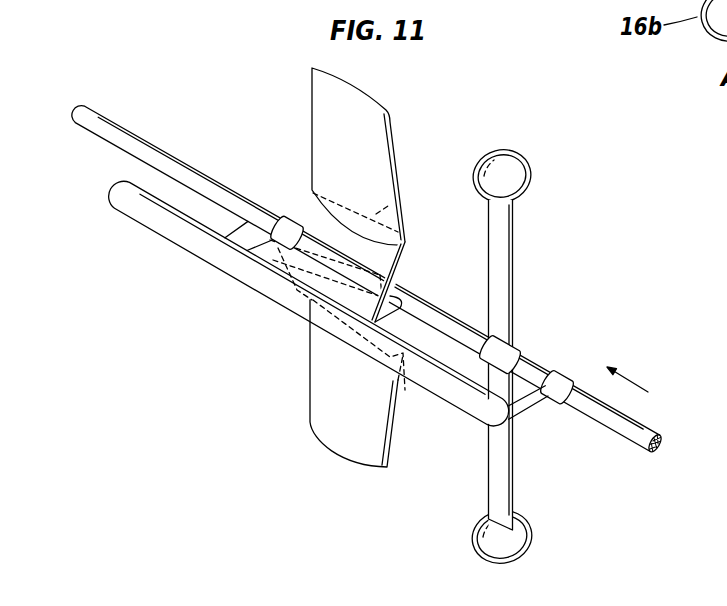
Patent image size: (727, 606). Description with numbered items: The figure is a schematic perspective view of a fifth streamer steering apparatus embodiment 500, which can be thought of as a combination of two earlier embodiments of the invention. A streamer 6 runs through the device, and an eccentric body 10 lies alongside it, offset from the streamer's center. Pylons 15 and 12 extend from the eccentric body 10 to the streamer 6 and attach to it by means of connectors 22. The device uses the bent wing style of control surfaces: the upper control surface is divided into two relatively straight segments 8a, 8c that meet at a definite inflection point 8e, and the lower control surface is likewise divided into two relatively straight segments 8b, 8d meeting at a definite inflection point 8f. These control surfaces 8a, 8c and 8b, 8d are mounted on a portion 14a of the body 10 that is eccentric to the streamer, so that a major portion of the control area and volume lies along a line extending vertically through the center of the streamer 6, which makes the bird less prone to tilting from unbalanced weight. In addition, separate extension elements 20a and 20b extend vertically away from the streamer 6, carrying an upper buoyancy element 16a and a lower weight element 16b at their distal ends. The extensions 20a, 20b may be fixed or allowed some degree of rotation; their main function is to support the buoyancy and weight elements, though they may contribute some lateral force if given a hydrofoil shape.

The streamer steering apparatus embodiment 500 is at (459, 129).
The streamer 6 is at (605, 431).
The eccentric body 10 is at (449, 405).
The pylon 12 is at (536, 413).
The pylon 15 is at (242, 230).
The connector 22 is at (278, 210).
The upper buoyancy element 16a is at (517, 168).
The lower weight element 16b is at (516, 547).
The upper extension element 20a is at (516, 238).
The lower extension element 20b is at (488, 483).
The upper control surface segment 8a is at (323, 101).
The lower control surface segment 8b is at (323, 395).
The upper control surface segment 8c is at (398, 258).
The lower control surface segment 8d is at (303, 311).
The inflection point 8e is at (383, 213).
The inflection point 8f is at (347, 335).
The eccentric body portion 14a is at (398, 321).